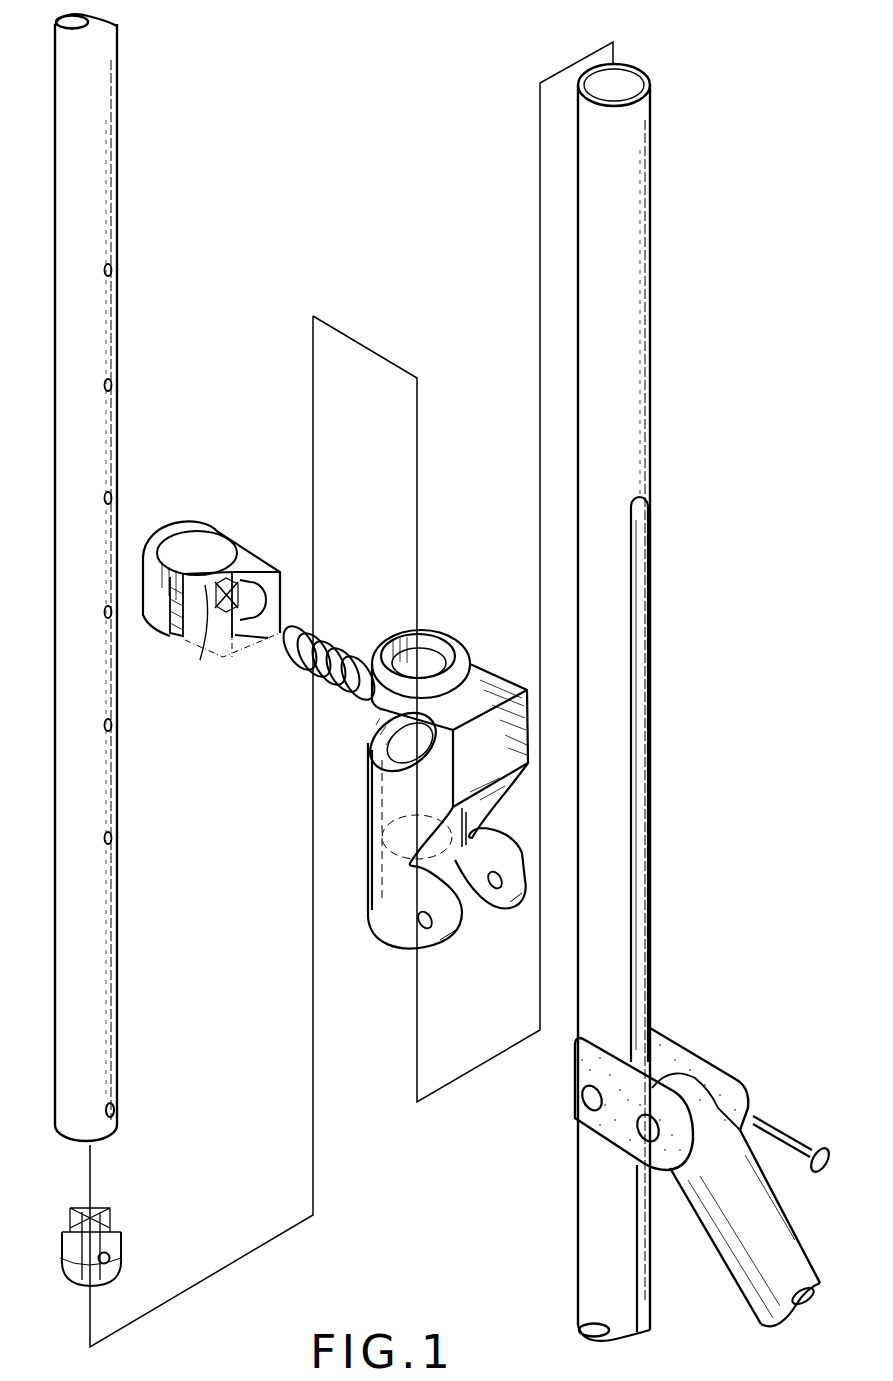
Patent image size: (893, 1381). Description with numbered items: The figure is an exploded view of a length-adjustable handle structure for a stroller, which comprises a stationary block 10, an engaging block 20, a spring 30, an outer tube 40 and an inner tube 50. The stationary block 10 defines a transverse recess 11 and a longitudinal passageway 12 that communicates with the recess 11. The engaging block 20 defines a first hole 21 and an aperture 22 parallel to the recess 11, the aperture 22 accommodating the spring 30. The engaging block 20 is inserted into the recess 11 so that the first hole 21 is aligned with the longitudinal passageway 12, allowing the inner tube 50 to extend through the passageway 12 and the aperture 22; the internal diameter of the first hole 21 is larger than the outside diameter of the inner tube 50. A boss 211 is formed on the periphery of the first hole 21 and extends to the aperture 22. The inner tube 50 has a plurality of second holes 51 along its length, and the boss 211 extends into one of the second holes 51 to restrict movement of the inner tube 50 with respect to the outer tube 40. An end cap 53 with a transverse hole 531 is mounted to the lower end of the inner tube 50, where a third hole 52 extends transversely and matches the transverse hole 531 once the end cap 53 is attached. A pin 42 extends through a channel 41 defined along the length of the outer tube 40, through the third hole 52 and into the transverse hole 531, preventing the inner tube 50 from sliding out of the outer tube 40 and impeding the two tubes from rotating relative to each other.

The stationary block 10 is at (372, 812).
The transverse recess 11 is at (372, 725).
The longitudinal passageway 12 is at (415, 630).
The engaging block 20 is at (222, 525).
The first hole 21 is at (190, 540).
The boss 211 is at (216, 586).
The aperture 22 is at (270, 600).
The spring 30 is at (305, 670).
The outer tube 40 is at (625, 418).
The channel 41 is at (640, 820).
The pin 42 is at (775, 1120).
The inner tube 50 is at (110, 128).
The second holes 51 is at (115, 497).
The third hole 52 is at (125, 1112).
The end cap 53 is at (82, 1290).
The transverse hole 531 is at (112, 1240).